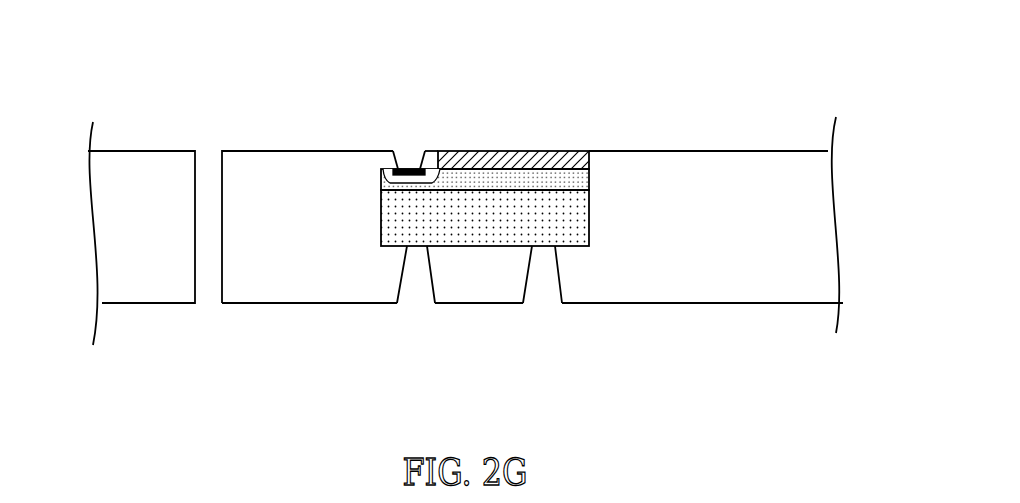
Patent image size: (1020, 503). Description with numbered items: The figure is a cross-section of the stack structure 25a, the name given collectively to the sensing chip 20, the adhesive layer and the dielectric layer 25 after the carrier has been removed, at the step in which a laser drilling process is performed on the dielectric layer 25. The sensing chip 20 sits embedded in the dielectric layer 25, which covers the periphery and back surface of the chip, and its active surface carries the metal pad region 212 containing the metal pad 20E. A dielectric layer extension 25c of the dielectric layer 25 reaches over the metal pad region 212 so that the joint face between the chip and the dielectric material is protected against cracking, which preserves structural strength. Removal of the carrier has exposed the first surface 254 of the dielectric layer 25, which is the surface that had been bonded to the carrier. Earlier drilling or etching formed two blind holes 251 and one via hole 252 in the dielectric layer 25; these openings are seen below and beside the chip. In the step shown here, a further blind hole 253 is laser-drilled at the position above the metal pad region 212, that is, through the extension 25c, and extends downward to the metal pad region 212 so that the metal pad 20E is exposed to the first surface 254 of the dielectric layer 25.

The dielectric layer 25 is at (465, 231).
The stack structure 25a is at (782, 67).
The first surface 254 is at (263, 152).
The via hole 252 is at (209, 264).
The blind hole 253 is at (410, 162).
The dielectric layer extension 25c is at (390, 157).
The sensing chip 20 is at (604, 217).
The metal pad 20E is at (427, 168).
The metal pad region 212 is at (410, 175).
The blind hole 251 is at (418, 271).